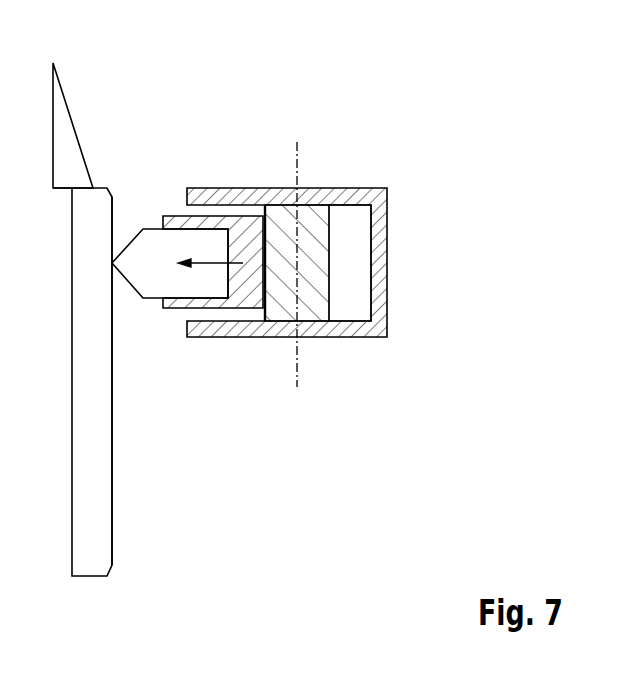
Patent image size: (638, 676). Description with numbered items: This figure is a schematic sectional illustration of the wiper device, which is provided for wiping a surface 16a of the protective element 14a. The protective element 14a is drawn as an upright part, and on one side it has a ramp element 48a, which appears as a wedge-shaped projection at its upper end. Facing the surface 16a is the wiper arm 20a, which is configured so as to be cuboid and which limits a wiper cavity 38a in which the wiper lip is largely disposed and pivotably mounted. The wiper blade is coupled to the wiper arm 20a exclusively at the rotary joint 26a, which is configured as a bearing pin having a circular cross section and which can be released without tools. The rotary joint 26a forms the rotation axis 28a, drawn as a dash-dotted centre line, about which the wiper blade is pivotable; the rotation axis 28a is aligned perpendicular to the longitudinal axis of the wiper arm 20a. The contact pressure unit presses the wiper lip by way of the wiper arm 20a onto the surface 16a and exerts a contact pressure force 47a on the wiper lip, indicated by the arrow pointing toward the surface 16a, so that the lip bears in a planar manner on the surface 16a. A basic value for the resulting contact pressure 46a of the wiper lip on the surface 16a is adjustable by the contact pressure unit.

The protective element 14a is at (105, 522).
The surface 16a is at (112, 482).
The wiper arm 20a is at (378, 220).
The rotary joint 26a is at (317, 318).
The rotation axis 28a is at (299, 151).
The wiper cavity 38a is at (348, 287).
The contact pressure 46a is at (187, 307).
The contact pressure force 47a is at (215, 263).
The ramp element 48a is at (72, 162).